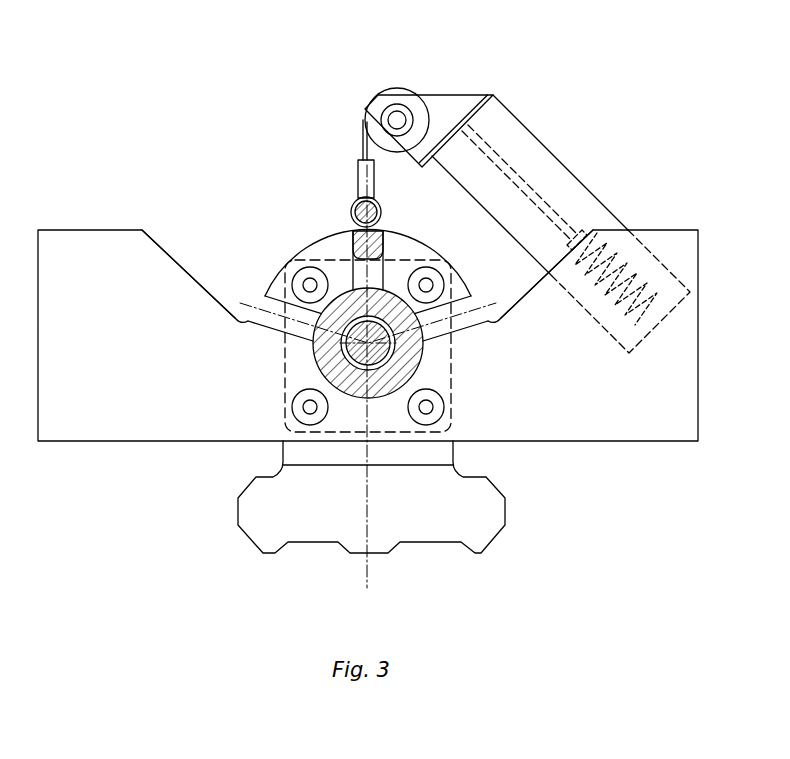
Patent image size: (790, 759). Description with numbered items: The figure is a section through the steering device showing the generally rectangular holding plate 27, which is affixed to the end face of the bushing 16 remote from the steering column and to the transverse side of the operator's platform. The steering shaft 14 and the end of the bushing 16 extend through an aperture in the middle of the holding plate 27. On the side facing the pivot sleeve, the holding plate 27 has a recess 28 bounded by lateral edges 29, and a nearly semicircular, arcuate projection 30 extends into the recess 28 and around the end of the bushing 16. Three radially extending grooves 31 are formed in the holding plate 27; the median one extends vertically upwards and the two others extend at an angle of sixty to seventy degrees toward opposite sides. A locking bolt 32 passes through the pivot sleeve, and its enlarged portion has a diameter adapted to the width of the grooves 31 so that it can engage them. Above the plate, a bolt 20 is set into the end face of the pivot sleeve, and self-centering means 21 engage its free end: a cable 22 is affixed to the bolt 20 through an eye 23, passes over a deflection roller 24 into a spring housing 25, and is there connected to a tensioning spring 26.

The steering shaft 14 is at (400, 358).
The bushing 16 is at (315, 370).
The bolt 20 is at (381, 213).
The self-centering means 21 is at (468, 67).
The cable 22 is at (362, 140).
The eye 23 is at (374, 187).
The deflection roller 24 is at (397, 88).
The spring housing 25 is at (556, 177).
The tensioning spring 26 is at (620, 230).
The holding plate 27 is at (517, 441).
The recess 28 is at (365, 280).
The lateral edges 29 is at (166, 251).
The arcuate projection 30 is at (405, 246).
The grooves 31 is at (353, 270).
The locking bolt 32 is at (353, 240).